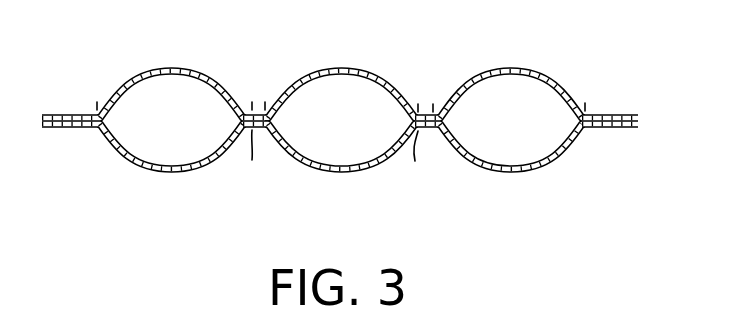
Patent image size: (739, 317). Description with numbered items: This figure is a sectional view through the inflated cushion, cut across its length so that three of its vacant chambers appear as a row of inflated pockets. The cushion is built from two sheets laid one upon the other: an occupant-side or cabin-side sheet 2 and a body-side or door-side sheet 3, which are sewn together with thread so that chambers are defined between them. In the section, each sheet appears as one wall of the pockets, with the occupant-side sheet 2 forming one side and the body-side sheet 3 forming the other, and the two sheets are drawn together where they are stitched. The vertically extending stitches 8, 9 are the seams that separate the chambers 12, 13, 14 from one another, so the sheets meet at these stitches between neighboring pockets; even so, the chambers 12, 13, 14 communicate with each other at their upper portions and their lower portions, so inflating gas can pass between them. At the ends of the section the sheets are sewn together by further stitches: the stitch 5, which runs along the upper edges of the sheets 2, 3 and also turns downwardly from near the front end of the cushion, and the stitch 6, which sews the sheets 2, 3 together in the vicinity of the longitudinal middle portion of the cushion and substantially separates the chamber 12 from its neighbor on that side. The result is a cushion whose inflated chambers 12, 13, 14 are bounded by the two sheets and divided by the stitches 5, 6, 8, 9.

The occupant-side sheet 2 is at (383, 164).
The body-side sheet 3 is at (355, 67).
The stitch 5 is at (98, 133).
The stitch 6 is at (585, 133).
The stitch 8 is at (433, 133).
The stitch 9 is at (265, 133).
The chamber 12 is at (517, 157).
The chamber 13 is at (342, 145).
The chamber 14 is at (177, 152).